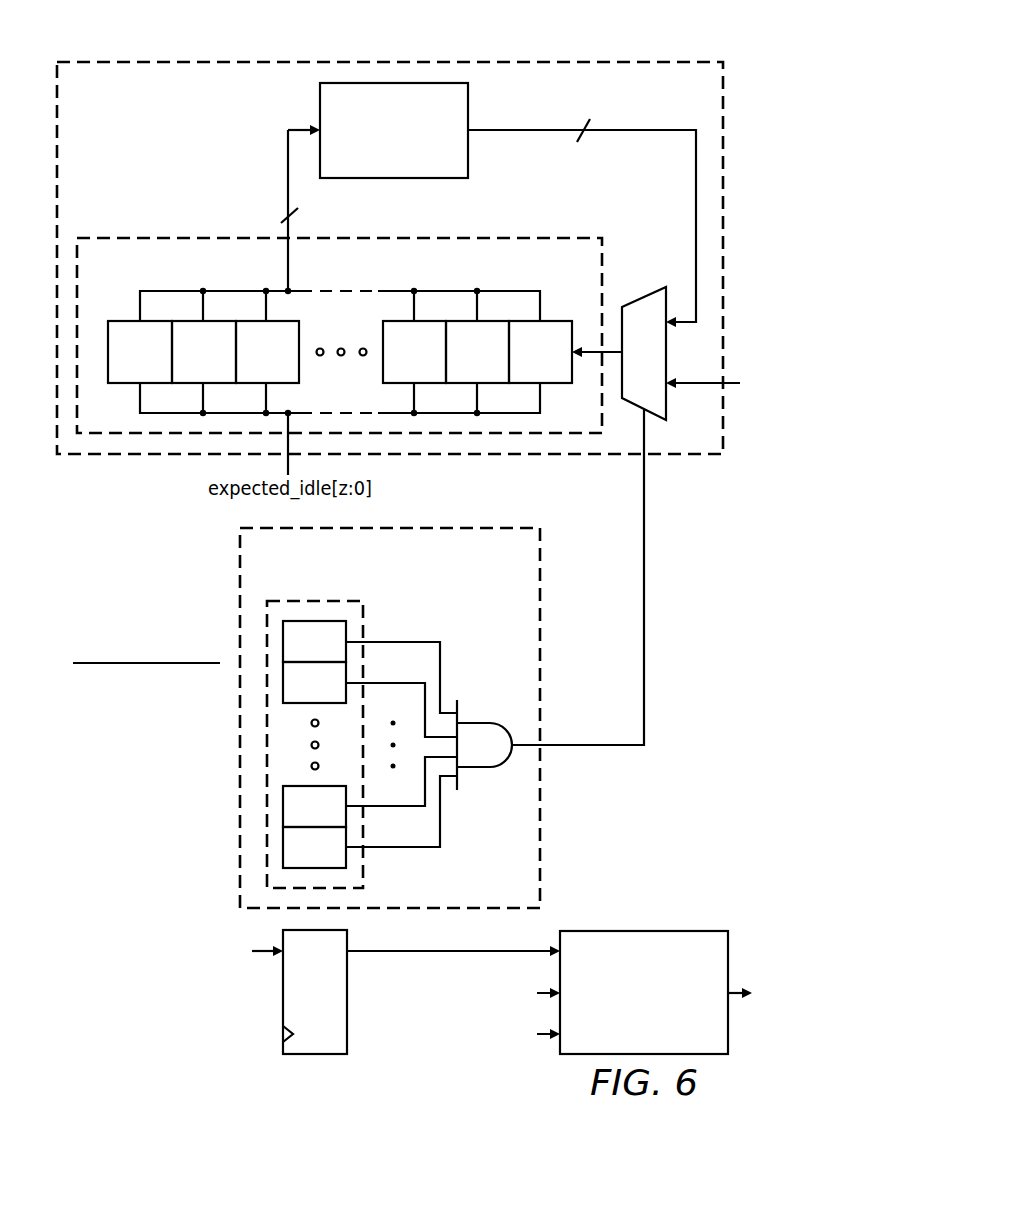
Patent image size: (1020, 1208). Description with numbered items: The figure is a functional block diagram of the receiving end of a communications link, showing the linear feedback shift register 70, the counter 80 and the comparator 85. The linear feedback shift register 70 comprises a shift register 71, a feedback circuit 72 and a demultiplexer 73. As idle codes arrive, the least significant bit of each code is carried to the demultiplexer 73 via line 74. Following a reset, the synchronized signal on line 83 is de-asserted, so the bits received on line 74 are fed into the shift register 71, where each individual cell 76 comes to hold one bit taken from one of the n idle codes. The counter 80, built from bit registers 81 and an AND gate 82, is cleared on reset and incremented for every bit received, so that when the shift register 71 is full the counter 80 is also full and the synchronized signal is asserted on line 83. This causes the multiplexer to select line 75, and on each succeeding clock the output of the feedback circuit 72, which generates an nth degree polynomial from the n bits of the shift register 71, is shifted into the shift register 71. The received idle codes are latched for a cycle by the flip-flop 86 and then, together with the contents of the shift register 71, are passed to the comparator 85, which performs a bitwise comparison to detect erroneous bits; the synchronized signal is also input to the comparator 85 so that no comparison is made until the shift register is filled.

The linear feedback shift register 70 is at (201, 59).
The shift register 71 is at (162, 234).
The feedback circuit 72 is at (320, 106).
The demultiplexer 73 is at (648, 298).
The line 74 is at (690, 386).
The line 75 is at (645, 130).
The cell 76 is at (118, 316).
The counter 80 is at (550, 806).
The bit registers 81 is at (310, 596).
The AND gate 82 is at (481, 768).
The line 83 is at (644, 500).
The comparator 85 is at (630, 1019).
The flip-flop 86 is at (301, 1005).